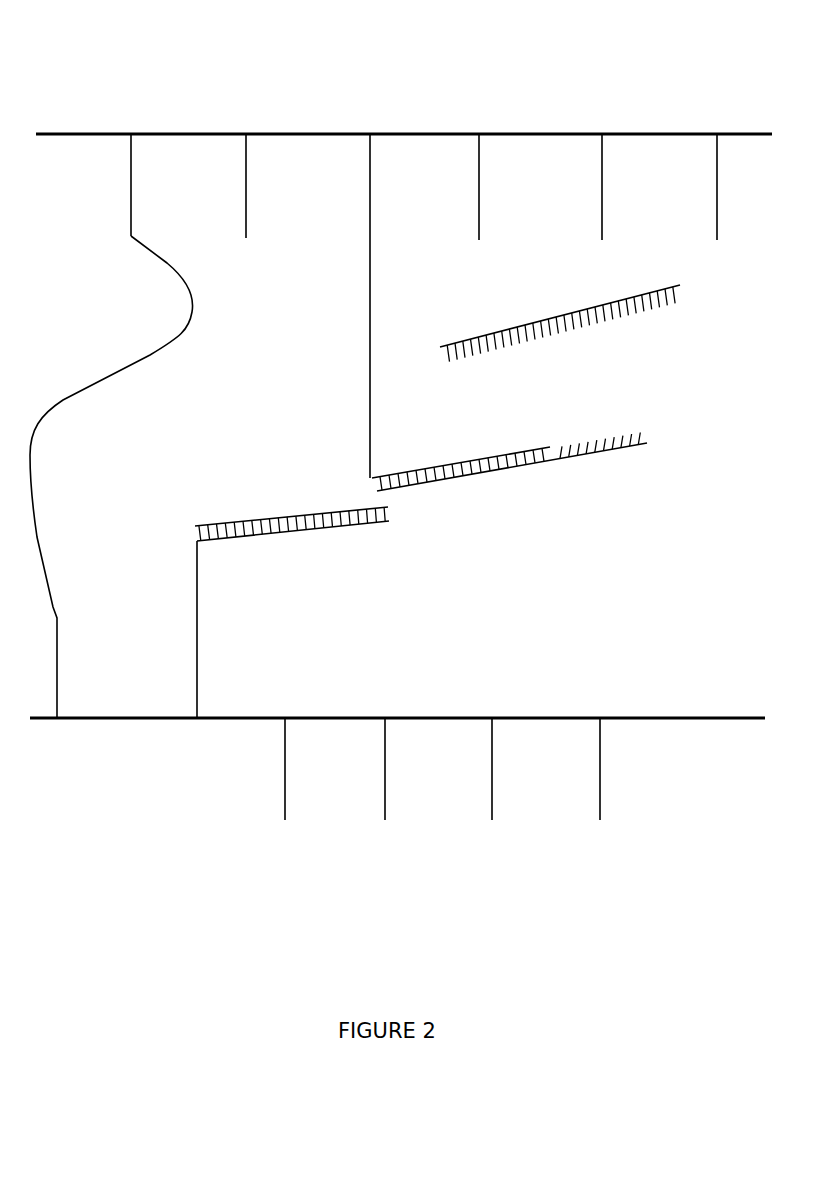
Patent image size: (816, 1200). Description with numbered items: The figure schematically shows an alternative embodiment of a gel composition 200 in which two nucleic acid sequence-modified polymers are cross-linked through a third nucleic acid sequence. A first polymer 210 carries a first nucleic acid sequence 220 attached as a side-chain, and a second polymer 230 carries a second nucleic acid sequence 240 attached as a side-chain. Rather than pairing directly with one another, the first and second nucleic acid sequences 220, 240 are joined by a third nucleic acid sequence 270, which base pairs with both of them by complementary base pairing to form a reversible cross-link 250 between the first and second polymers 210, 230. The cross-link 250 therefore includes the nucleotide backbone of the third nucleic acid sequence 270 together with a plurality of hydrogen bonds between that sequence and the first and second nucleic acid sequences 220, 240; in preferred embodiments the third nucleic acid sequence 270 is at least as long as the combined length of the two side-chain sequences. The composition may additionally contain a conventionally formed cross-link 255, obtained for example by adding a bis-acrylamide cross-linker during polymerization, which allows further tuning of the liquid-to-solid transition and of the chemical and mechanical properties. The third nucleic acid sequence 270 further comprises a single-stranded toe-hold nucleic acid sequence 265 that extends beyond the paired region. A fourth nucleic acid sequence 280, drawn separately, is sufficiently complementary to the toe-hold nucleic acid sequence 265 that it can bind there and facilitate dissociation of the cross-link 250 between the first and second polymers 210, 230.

The gel composition 200 is at (92, 75).
The first polymer 210 is at (256, 134).
The first nucleic acid sequence 220 is at (482, 460).
The second polymer 230 is at (145, 720).
The second nucleic acid sequence 240 is at (245, 533).
The cross-link 250 is at (375, 482).
The conventionally formed cross-link 255 is at (32, 453).
The toe-hold nucleic acid sequence 265 is at (631, 419).
The third nucleic acid sequence 270 is at (440, 483).
The fourth nucleic acid sequence 280 is at (515, 325).